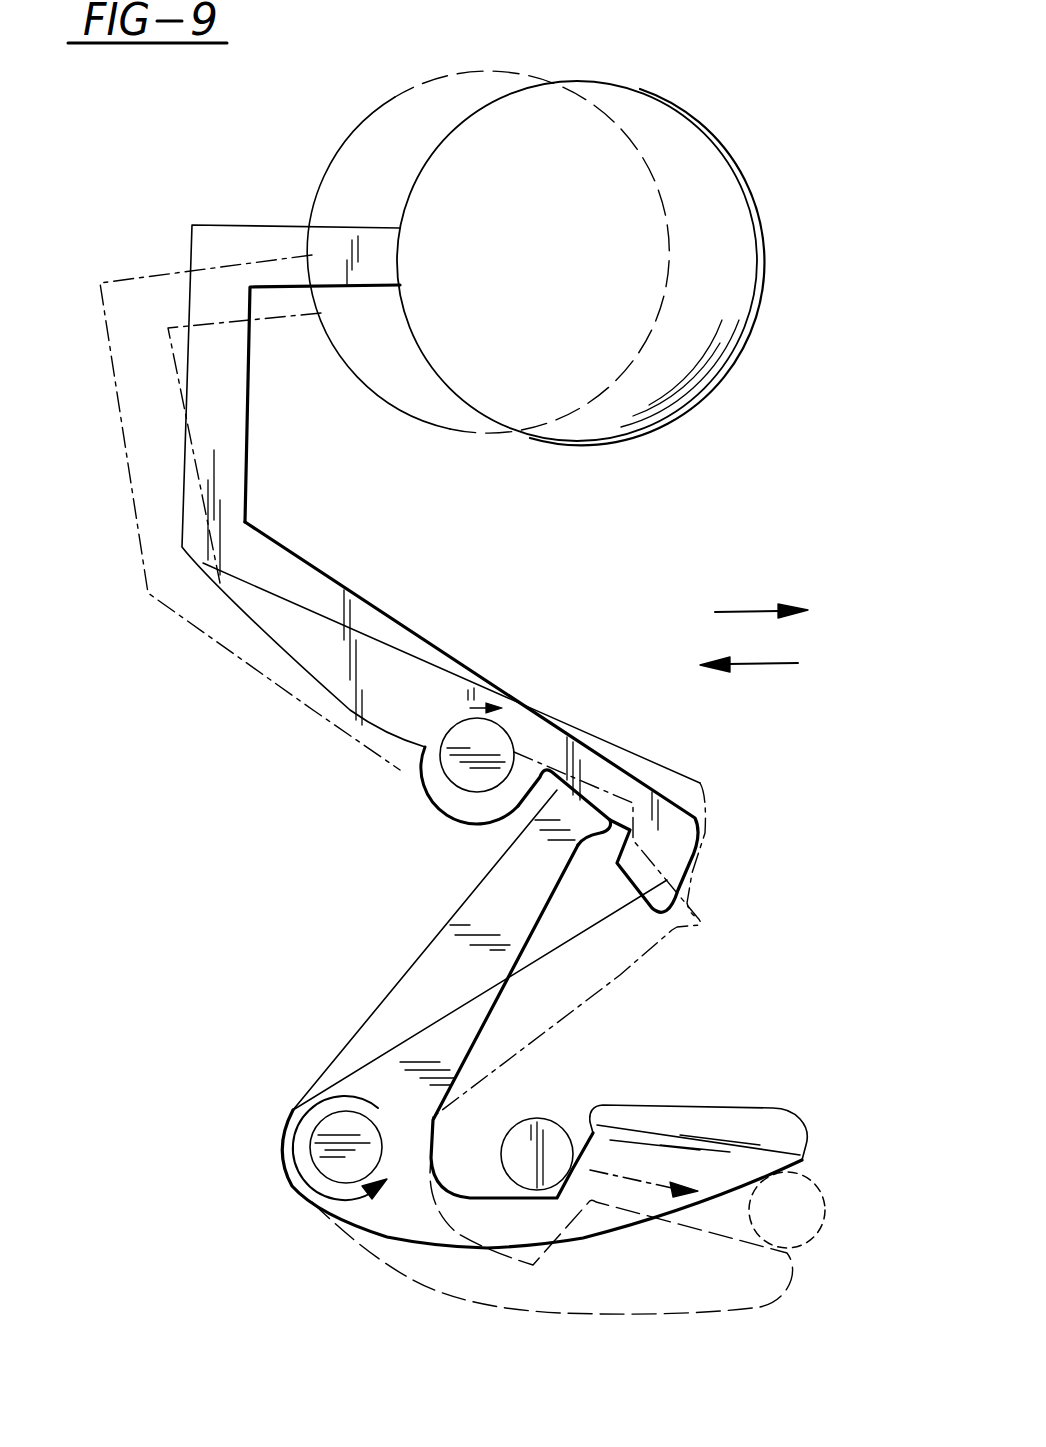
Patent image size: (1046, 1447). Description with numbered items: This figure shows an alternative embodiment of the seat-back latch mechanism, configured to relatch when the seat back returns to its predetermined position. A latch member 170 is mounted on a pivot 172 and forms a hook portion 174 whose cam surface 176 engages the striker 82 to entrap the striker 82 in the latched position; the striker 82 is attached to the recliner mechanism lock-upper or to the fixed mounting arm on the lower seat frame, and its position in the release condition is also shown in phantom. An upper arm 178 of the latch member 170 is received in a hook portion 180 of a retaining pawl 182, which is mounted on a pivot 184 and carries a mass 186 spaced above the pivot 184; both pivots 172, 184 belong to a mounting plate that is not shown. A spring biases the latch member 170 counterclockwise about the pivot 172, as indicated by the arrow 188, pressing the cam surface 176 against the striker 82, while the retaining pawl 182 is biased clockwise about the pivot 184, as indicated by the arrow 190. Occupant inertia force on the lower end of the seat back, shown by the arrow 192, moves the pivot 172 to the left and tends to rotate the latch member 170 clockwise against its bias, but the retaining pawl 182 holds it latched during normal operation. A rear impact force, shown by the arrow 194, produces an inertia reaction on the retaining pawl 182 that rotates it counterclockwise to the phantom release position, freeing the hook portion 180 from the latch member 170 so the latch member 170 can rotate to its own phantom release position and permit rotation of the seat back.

The striker 82 is at (545, 1118).
The latch member 170 is at (355, 1015).
The pivot 172 is at (307, 1115).
The hook portion 174 is at (626, 1066).
The cam surface 176 is at (650, 1112).
The upper arm 178 is at (450, 925).
The hook portion 180 is at (721, 869).
The retaining pawl 182 is at (404, 620).
The pivot 184 is at (512, 747).
The mass 186 is at (697, 127).
The arrow 188 is at (273, 1162).
The arrow 190 is at (427, 745).
The arrow 192 is at (767, 663).
The arrow 194 is at (748, 608).